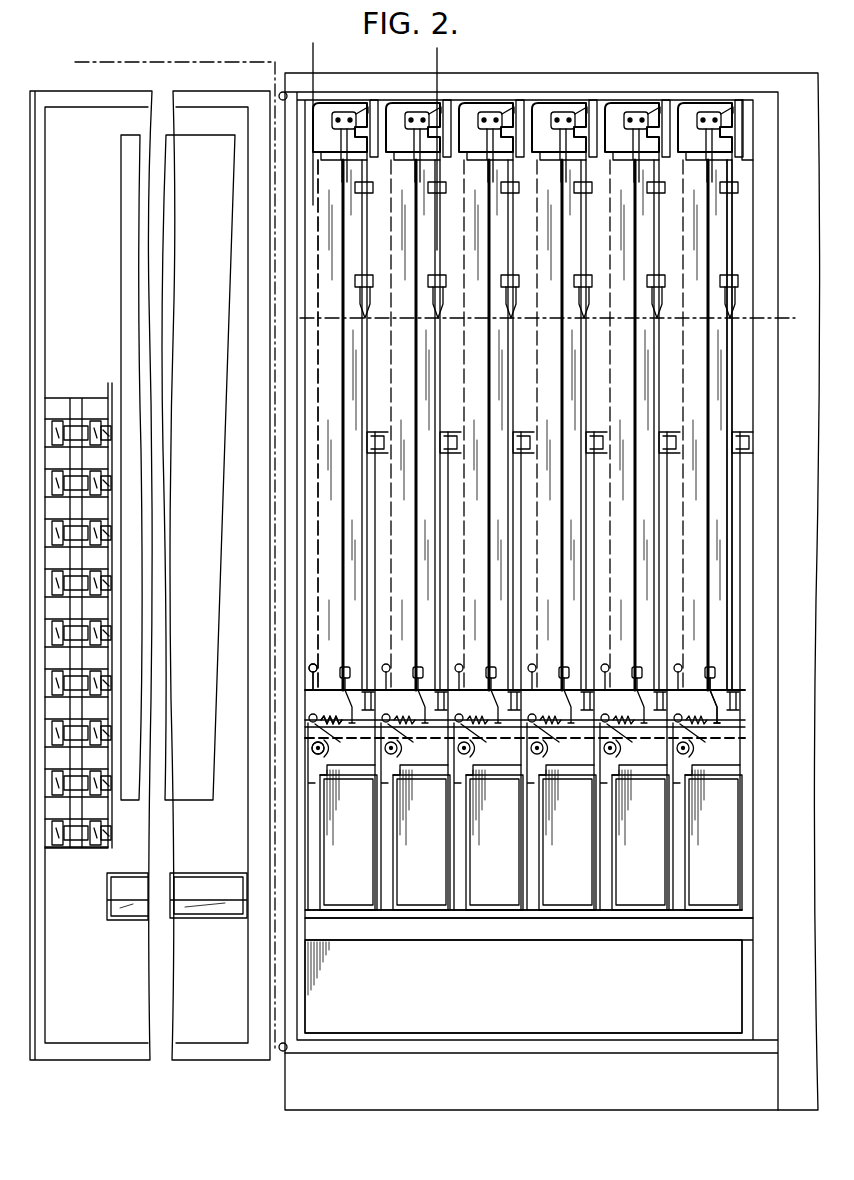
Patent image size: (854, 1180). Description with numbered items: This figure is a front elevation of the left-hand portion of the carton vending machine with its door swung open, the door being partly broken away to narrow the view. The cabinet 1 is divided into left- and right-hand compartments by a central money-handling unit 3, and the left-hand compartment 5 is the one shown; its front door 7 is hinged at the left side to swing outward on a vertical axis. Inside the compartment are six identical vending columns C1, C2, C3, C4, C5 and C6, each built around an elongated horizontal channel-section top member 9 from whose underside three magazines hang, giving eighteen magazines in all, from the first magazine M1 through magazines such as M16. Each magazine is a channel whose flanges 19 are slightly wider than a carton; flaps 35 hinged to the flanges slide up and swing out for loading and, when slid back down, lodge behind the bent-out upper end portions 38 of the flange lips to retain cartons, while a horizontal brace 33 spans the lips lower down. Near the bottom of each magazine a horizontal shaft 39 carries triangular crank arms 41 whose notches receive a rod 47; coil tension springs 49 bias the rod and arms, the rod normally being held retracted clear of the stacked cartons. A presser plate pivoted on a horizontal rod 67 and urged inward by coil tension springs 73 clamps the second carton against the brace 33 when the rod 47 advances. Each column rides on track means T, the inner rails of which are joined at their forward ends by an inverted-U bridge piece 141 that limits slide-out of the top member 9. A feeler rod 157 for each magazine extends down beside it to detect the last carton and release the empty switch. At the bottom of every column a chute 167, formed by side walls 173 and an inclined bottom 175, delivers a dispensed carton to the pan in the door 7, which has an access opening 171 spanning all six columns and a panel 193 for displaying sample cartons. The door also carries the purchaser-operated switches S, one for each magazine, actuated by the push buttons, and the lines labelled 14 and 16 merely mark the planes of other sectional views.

The cabinet 1 is at (591, 70).
The money-handling unit 3 is at (65, 82).
The left-hand compartment 5 is at (520, 1034).
The front door 7 is at (90, 1062).
The column top member 9 is at (628, 163).
The section line 14- 14 is at (294, 52).
The section line 16- 16 is at (416, 56).
The flanges 19 is at (716, 569).
The horizontal brace 33 is at (731, 695).
The flaps 35 is at (738, 228).
The upper end portions of lips 38 is at (733, 308).
The horizontal shaft 39 is at (312, 748).
The crank arms 41 is at (322, 738).
The rod 47 is at (322, 720).
The coil tension springs 49 is at (742, 718).
The horizontal rod 67 is at (310, 668).
The coil tension springs 73 is at (719, 688).
The bridge piece 141 is at (416, 103).
The feeler rod 157 is at (340, 527).
The chute 167 is at (716, 857).
The access opening 171 is at (207, 876).
The side walls 173 is at (375, 883).
The inclined bottom 175 is at (397, 925).
The panel 193 is at (130, 189).
The vending column C1 is at (350, 916).
The vending column C2 is at (423, 916).
The vending column C3 is at (493, 916).
The vending column C4 is at (565, 916).
The vending column C5 is at (641, 916).
The vending column C6 is at (711, 916).
The magazine M1 is at (318, 547).
The magazine M16 is at (731, 403).
The switch S is at (96, 418).
The track means T is at (746, 115).